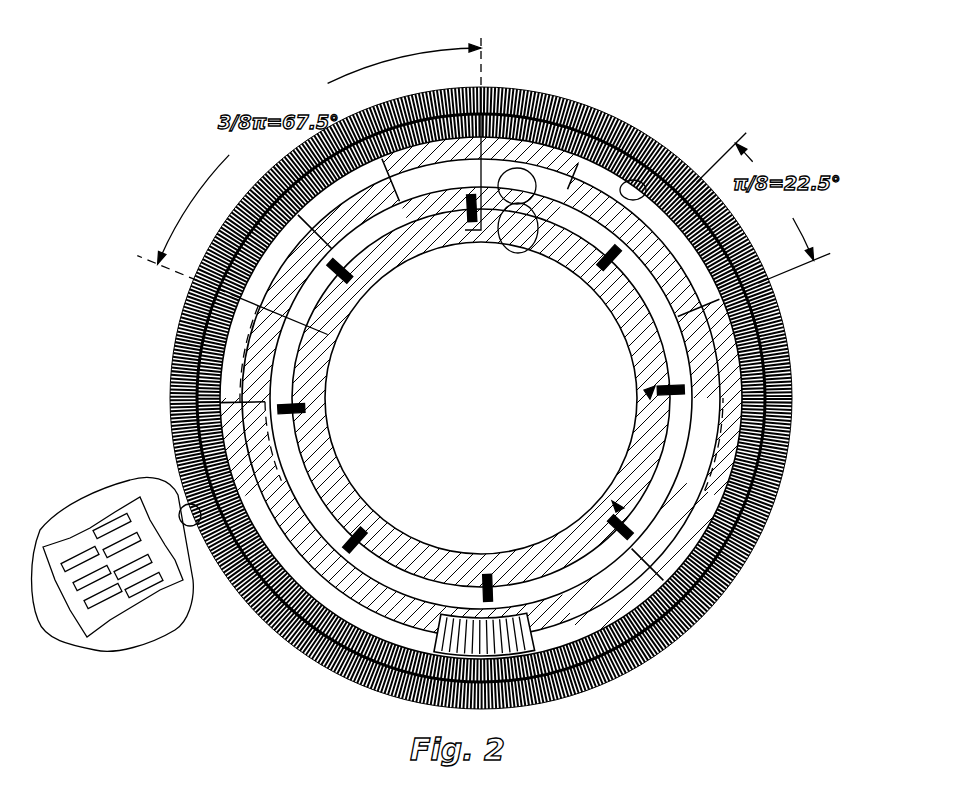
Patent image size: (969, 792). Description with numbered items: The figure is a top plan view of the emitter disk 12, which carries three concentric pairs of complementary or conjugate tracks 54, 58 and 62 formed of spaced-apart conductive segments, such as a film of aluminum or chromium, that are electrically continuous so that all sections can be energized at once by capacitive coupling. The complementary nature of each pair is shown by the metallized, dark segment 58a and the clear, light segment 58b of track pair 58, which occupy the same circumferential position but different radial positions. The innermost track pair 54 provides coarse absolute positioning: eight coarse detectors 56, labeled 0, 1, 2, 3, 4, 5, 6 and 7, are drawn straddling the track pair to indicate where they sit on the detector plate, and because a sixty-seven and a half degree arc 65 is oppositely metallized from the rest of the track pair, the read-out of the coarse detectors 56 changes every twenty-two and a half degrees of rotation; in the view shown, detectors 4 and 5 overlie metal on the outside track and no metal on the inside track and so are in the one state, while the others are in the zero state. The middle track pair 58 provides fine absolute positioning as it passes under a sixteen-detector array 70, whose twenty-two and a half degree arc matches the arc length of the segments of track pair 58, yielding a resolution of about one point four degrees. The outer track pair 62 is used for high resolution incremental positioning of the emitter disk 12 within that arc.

The emitter disk 12 is at (654, 78).
The coarse absolute positioning track pair 54 is at (515, 150).
The high resolution incremental positioning track pair 62 is at (645, 183).
The fine absolute positioning track pair 58 is at (793, 343).
The metallized segment 58a is at (790, 303).
The clear segment 58b is at (788, 376).
The coarse detectors 56 is at (646, 394).
The 67.5 degree arc 65 is at (400, 250).
The detector array 70 is at (522, 650).
The coarse detector 0 is at (487, 574).
The coarse detector 1 is at (616, 514).
The coarse detector 2 is at (657, 384).
The coarse detector 3 is at (600, 265).
The coarse detector 4 is at (472, 224).
The coarse detector 5 is at (347, 283).
The coarse detector 6 is at (305, 410).
The coarse detector 7 is at (361, 528).